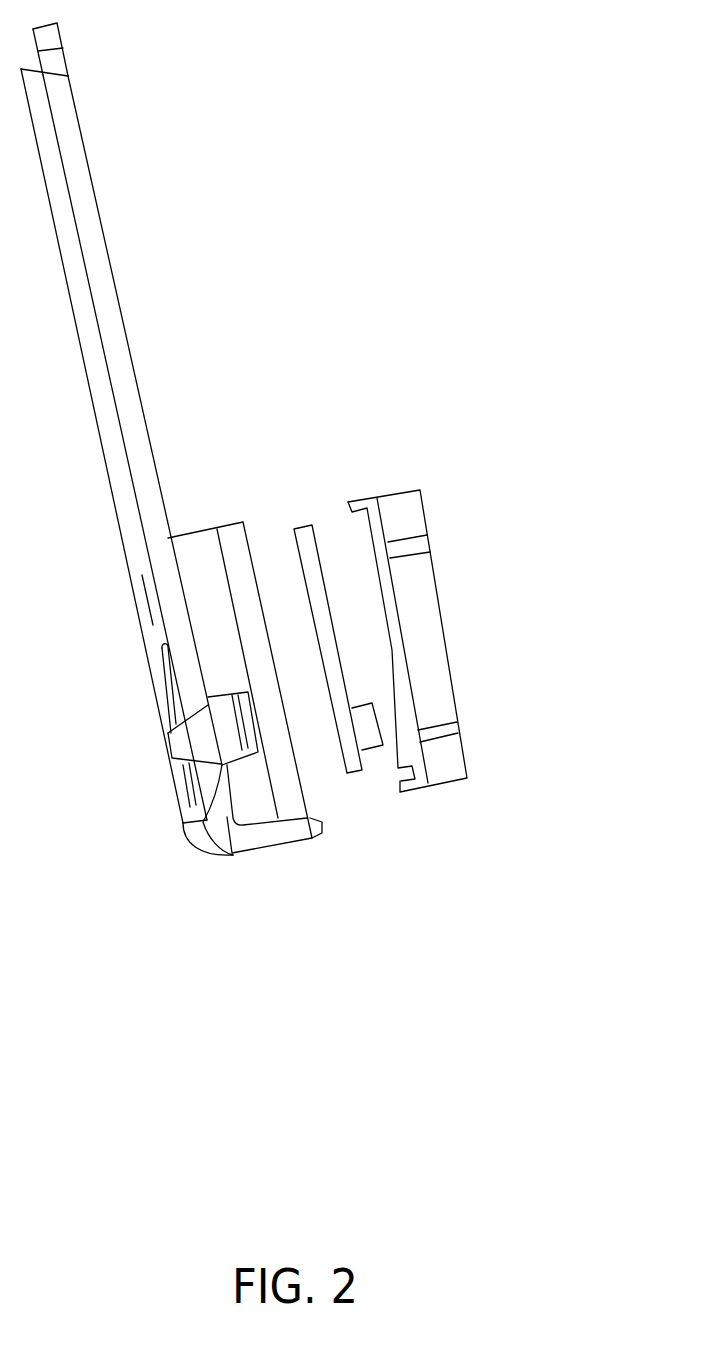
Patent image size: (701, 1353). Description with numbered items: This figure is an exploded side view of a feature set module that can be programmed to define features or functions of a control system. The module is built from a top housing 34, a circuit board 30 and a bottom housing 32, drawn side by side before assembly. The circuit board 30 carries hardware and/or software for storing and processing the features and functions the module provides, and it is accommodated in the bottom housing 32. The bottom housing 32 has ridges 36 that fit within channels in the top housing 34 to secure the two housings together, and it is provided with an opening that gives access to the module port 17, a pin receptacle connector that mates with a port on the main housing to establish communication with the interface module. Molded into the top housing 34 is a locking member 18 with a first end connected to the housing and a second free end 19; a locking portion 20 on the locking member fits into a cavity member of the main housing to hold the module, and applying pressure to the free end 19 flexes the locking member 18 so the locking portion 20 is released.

The module port 17 is at (367, 735).
The locking member 18 is at (210, 830).
The free end 19 is at (205, 749).
The locking portion 20 is at (210, 690).
The circuit board 30 is at (302, 523).
The bottom housing 32 is at (423, 492).
The top housing 34 is at (110, 257).
The ridges 36 is at (410, 547).